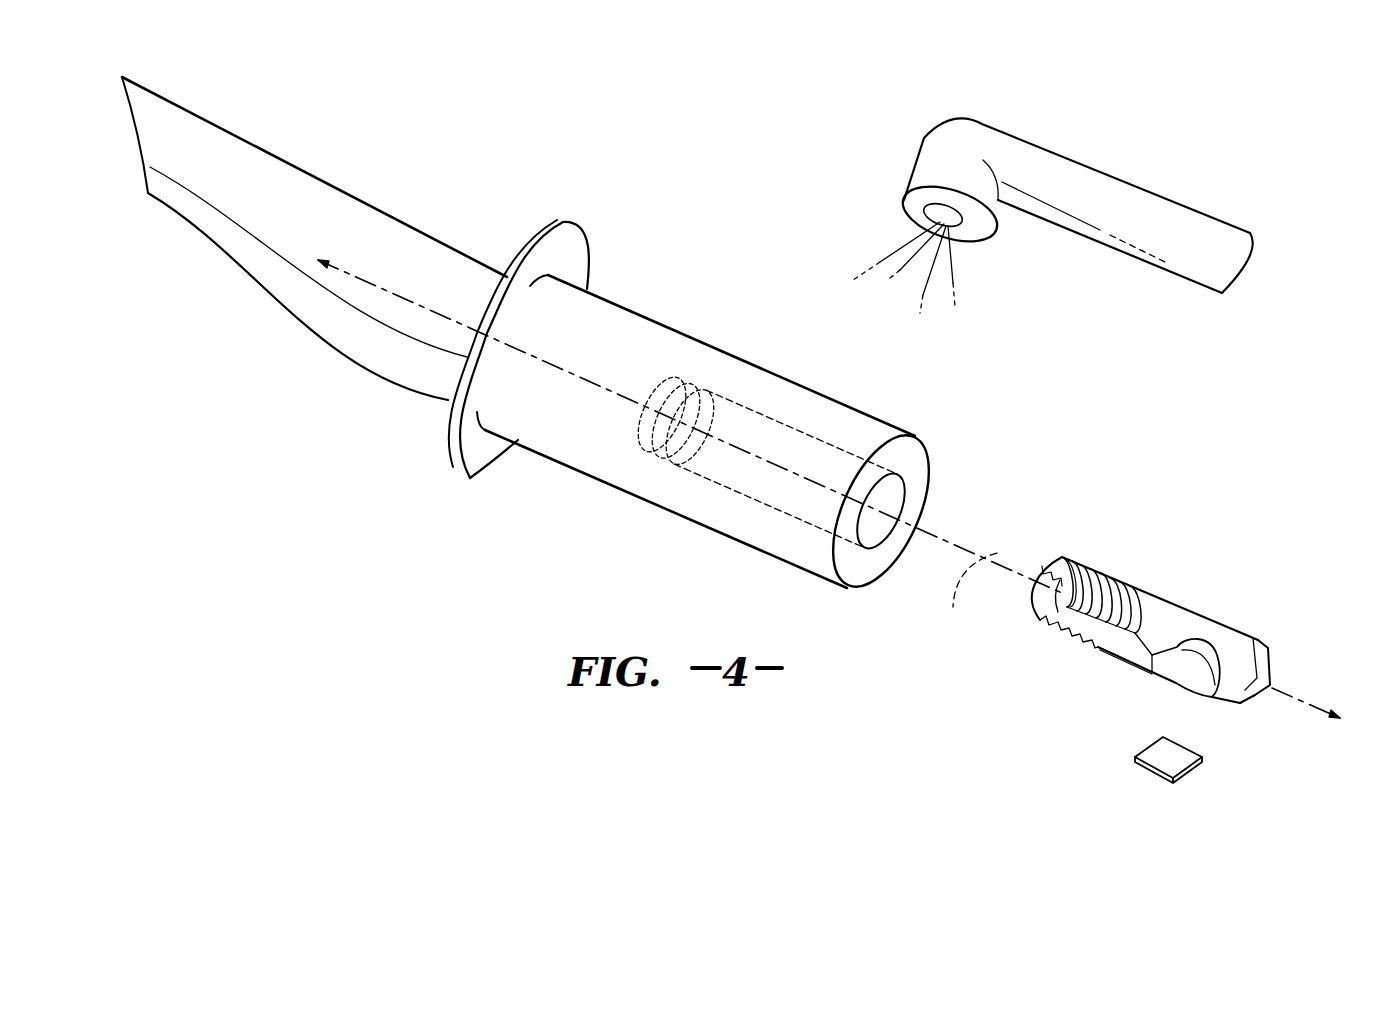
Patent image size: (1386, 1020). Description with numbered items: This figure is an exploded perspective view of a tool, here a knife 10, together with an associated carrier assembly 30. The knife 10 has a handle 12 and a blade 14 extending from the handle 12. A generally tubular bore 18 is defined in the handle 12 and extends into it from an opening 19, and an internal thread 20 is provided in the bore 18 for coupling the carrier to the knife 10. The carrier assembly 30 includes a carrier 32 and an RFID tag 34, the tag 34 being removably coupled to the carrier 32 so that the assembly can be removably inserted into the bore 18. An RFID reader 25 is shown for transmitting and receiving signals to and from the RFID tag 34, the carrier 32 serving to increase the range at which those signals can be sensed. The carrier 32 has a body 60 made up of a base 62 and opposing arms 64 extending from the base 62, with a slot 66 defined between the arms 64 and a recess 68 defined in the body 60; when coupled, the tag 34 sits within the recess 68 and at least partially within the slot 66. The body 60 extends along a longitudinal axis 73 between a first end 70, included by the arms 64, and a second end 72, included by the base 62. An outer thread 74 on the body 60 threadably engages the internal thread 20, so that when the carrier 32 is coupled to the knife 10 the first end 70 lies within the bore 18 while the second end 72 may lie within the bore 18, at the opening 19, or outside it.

The knife 10 is at (737, 136).
The handle 12 is at (731, 436).
The blade 14 is at (273, 153).
The bore 18 is at (895, 503).
The opening 19 is at (905, 478).
The internal thread 20 is at (645, 433).
The RFID reader 25 is at (1022, 125).
The carrier assembly 30 is at (1141, 626).
The carrier 32 is at (1073, 653).
The RFID tag 34 is at (1148, 782).
The body 60 is at (1185, 602).
The base 62 is at (1223, 630).
The arms 64 is at (1145, 603).
The slot 66 is at (1053, 608).
The recess 68 is at (1187, 680).
The first end 70 is at (1058, 558).
The second end 72 is at (1268, 663).
The longitudinal axis 73 is at (967, 596).
The outer thread 74 is at (1107, 570).